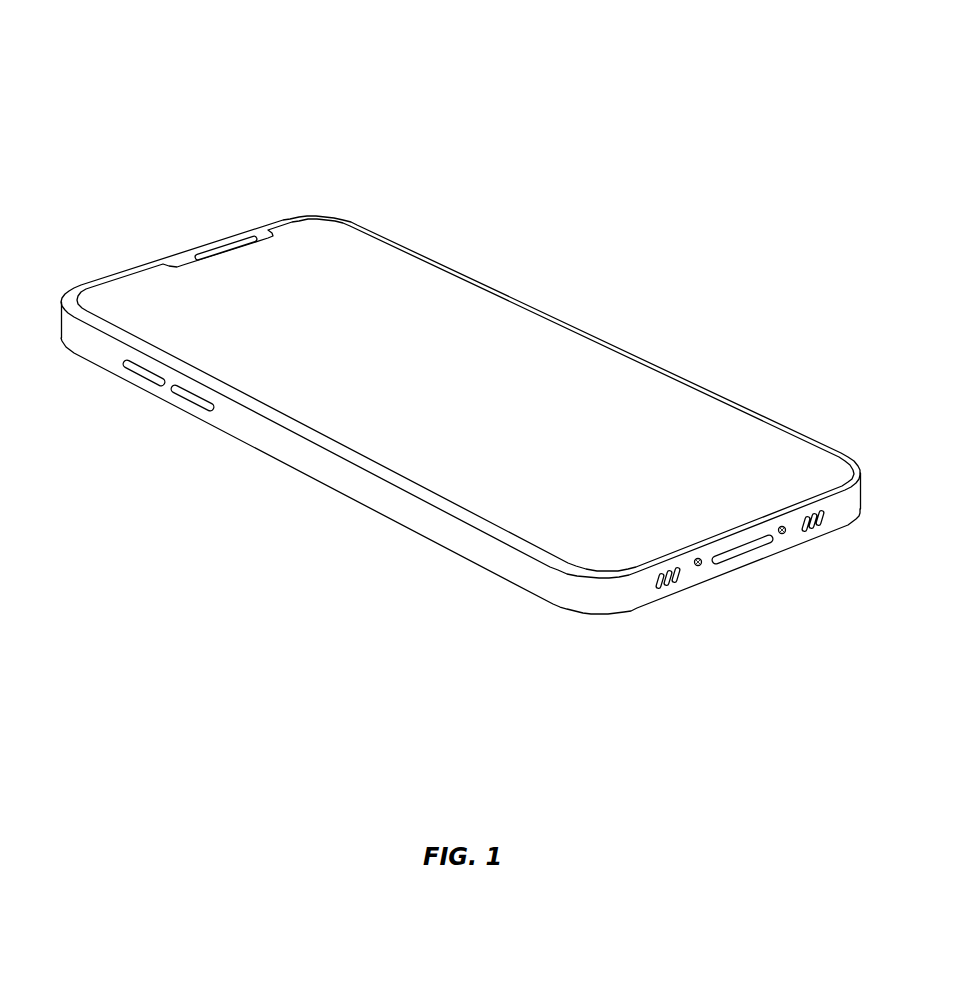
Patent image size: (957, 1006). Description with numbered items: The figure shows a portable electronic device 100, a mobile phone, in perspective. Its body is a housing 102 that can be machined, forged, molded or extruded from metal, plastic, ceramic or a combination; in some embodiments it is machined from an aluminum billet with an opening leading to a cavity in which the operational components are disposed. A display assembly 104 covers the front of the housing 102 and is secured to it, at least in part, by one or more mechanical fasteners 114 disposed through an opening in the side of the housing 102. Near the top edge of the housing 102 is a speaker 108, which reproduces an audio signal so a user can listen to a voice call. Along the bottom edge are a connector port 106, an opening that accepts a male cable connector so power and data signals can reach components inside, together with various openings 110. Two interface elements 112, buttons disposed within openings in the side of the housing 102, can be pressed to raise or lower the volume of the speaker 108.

The portable electronic device 100 is at (461, 335).
The housing 102 is at (345, 496).
The display assembly 104 is at (538, 311).
The connector port 106 is at (723, 563).
The speaker 108 is at (228, 247).
The openings 110 is at (662, 590).
The interface elements 112 is at (157, 381).
The mechanical fasteners 114 is at (782, 538).